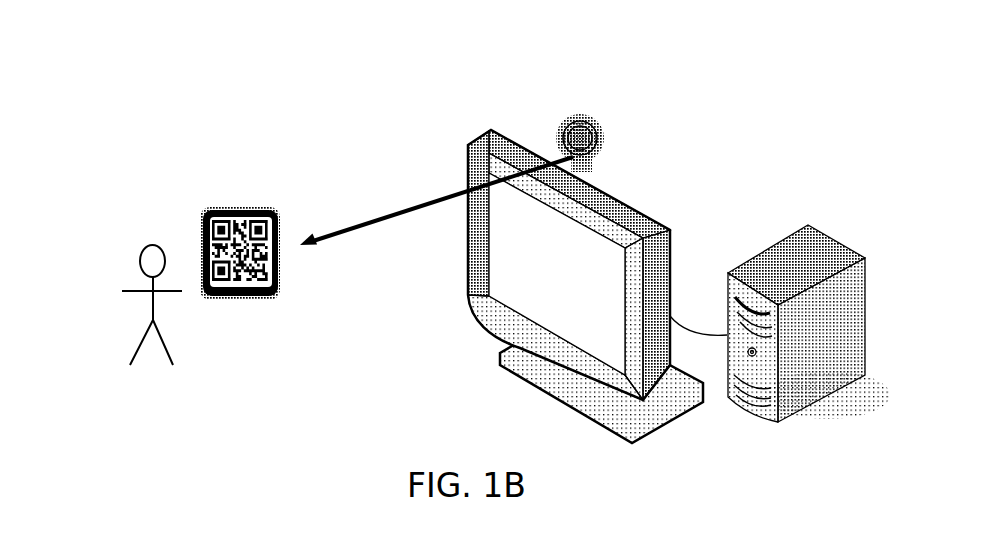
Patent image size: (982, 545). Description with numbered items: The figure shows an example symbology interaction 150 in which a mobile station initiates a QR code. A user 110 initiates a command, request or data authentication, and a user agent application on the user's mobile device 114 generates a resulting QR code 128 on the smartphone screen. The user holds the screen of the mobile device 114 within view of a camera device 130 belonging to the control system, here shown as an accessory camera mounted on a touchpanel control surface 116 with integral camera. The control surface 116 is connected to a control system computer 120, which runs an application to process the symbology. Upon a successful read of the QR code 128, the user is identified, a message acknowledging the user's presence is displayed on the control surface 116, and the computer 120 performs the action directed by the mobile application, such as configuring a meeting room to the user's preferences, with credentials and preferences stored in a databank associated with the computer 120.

The symbology interaction 150 is at (80, 50).
The user 110 is at (152, 328).
The mobile device 114 is at (272, 201).
The QR code 128 is at (236, 192).
The touchpanel control surface 116 is at (597, 286).
The camera device 130 is at (600, 110).
The computer 120 is at (809, 343).